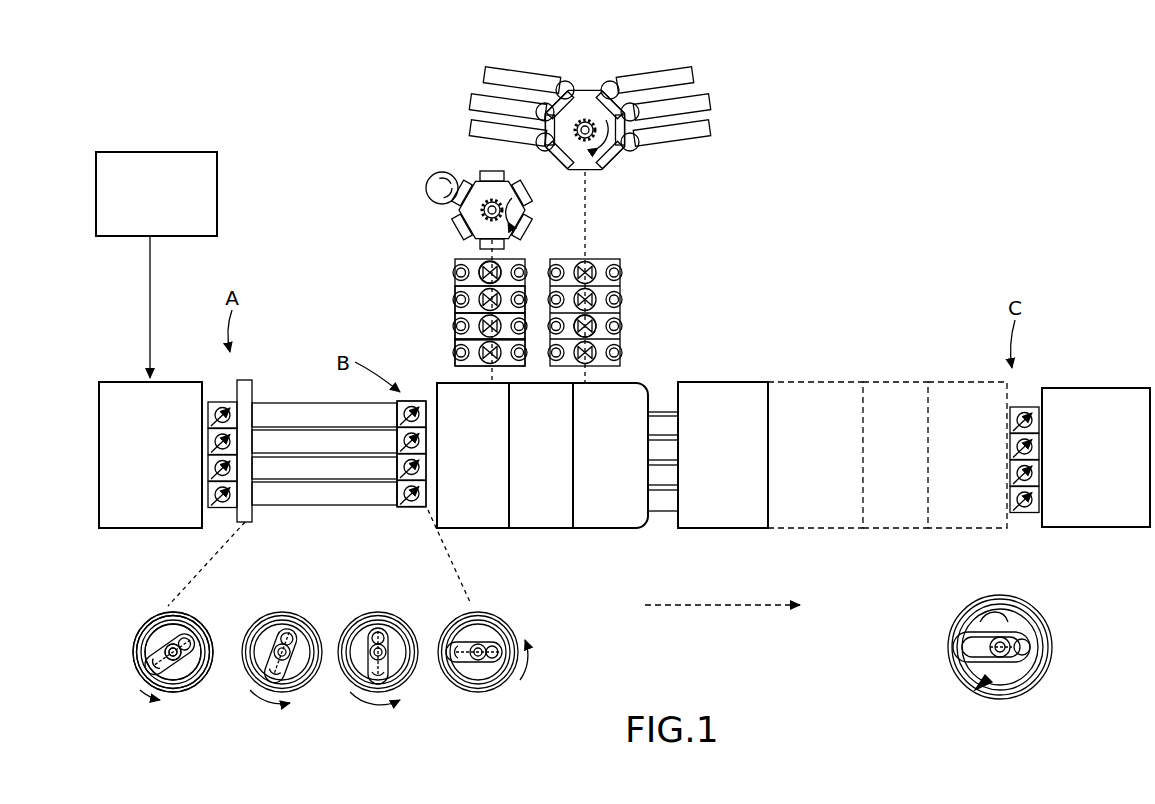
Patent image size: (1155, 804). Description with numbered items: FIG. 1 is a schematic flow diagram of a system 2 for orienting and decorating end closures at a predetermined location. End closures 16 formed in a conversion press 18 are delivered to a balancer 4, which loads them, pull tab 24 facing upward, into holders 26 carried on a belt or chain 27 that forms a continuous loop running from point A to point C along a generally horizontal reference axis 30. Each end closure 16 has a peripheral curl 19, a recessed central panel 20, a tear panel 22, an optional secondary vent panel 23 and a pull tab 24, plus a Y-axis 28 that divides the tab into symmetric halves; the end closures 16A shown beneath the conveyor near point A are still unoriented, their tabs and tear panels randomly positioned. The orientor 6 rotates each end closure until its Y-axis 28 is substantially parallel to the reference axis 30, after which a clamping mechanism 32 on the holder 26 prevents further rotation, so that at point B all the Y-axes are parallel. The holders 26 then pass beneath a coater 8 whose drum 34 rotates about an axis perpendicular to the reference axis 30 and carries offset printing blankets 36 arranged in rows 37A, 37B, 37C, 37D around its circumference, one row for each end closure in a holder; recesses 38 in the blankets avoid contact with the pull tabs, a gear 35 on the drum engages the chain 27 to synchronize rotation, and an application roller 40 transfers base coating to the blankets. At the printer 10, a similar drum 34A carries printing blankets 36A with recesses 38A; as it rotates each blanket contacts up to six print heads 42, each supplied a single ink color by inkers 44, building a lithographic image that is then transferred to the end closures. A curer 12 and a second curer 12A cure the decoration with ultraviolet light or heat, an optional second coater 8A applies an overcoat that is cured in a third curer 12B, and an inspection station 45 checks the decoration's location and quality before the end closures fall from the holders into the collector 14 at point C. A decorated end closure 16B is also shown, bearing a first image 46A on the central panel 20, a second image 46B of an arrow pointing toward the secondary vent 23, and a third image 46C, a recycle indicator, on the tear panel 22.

The system 2 is at (882, 200).
The balancer 4 is at (117, 380).
The orientor 6 is at (311, 384).
The coater 8 is at (388, 243).
The second coater 8A is at (802, 380).
The printer 10 is at (587, 540).
The curer 12 is at (535, 540).
The second curer 12A is at (745, 380).
The third curer 12B is at (875, 380).
The collector 14 is at (1078, 386).
The end closure 16 is at (240, 380).
The can end before decoration 16A is at (172, 712).
The decorated end closure 16B is at (1020, 514).
The conversion press 18 is at (164, 152).
The peripheral curl 19 is at (163, 618).
The central panel 20 is at (152, 630).
The tear panel 22 is at (160, 650).
The secondary vent panel 23 is at (200, 665).
The pull tab 24 is at (190, 635).
The holder 26 is at (215, 401).
The chain 27 is at (317, 506).
The Y-axis 28 is at (178, 672).
The reference axis 30 is at (700, 606).
The clamping mechanism 32 is at (398, 497).
The drum 34 is at (474, 257).
The drum of printer 34A is at (589, 100).
The gear 35 is at (500, 203).
The offset printing blankets 36 is at (455, 225).
The printing blankets 36A is at (615, 160).
The row 37A is at (432, 273).
The second row of can ends 37B is at (432, 300).
The third row of can ends 37C is at (432, 327).
The row 37D is at (432, 353).
The recesses 38 is at (510, 266).
The recesses 38A is at (620, 324).
The application roller 40 is at (426, 185).
The print heads 42 is at (564, 81).
The inkers 44 is at (487, 78).
The inspection station 45 is at (942, 380).
The first image 46A is at (980, 682).
The second image 46B is at (1010, 620).
The third image 46C is at (1040, 647).